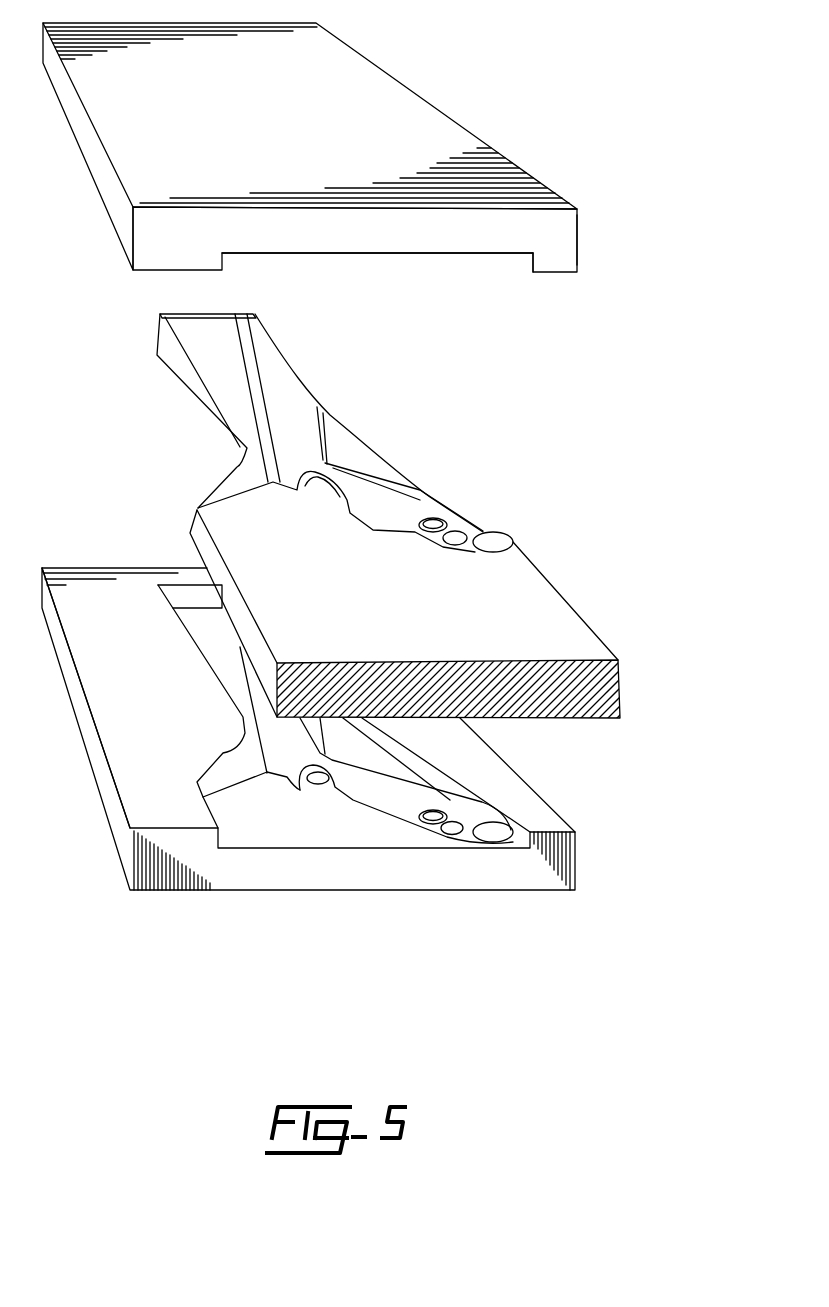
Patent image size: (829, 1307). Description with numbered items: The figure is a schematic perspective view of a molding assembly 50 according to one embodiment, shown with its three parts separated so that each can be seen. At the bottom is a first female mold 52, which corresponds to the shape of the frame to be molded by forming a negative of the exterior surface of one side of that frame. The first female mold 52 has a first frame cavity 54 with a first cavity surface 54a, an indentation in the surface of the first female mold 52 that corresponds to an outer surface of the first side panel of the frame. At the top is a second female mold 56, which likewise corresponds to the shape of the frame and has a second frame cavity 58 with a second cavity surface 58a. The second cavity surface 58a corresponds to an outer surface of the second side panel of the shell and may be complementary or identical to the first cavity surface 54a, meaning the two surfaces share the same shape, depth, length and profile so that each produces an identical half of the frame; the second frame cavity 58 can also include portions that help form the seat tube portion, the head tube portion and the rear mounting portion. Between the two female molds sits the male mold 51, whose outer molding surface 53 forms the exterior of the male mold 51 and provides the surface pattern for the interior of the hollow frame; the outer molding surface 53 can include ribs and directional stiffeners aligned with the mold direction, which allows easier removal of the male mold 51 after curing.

The molding assembly 50 is at (597, 162).
The male mold 51 is at (547, 592).
The first female mold 52 is at (545, 817).
The outer molding surface 53 is at (222, 346).
The first frame cavity 54 is at (392, 792).
The first cavity surface 54a is at (256, 782).
The second female mold 56 is at (578, 240).
The second frame cavity 58 is at (413, 284).
The second cavity surface 58a is at (472, 255).